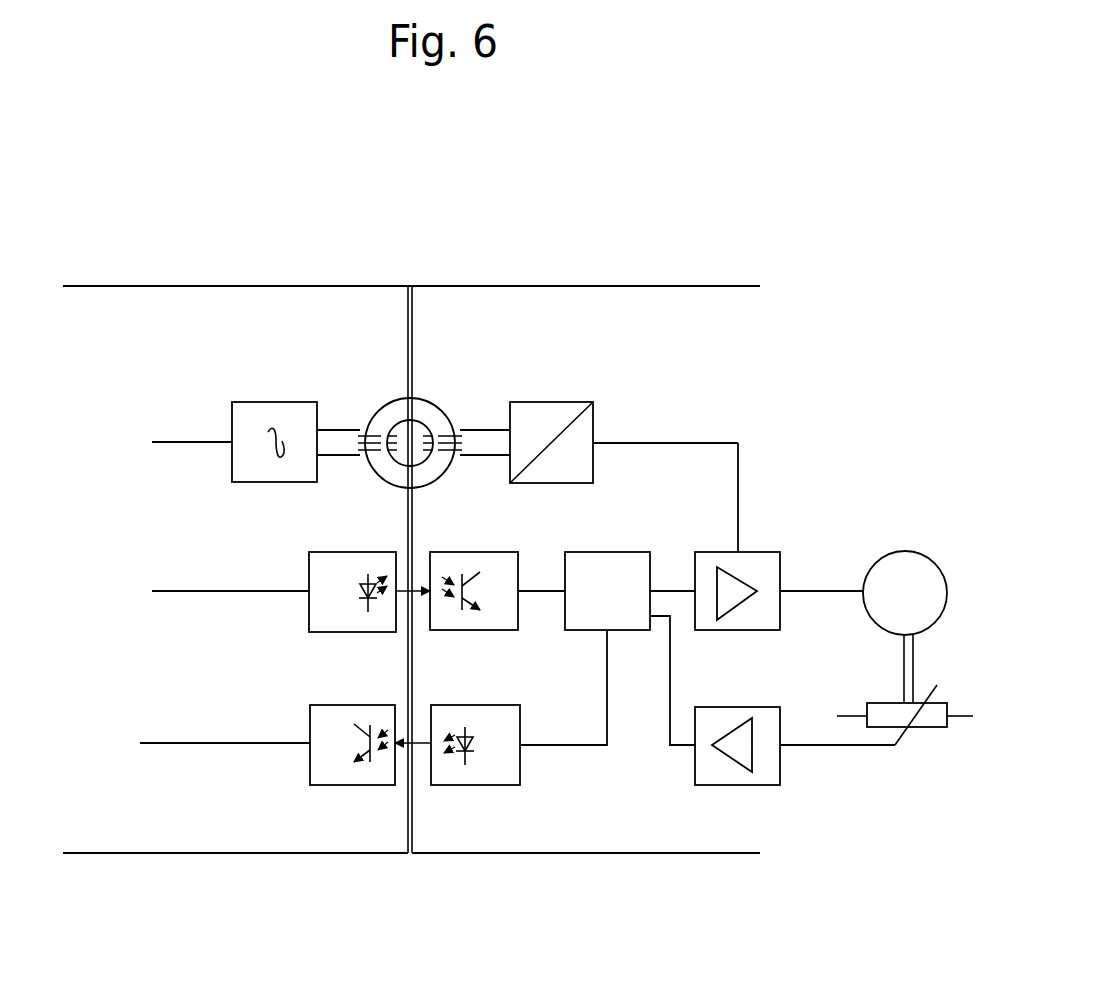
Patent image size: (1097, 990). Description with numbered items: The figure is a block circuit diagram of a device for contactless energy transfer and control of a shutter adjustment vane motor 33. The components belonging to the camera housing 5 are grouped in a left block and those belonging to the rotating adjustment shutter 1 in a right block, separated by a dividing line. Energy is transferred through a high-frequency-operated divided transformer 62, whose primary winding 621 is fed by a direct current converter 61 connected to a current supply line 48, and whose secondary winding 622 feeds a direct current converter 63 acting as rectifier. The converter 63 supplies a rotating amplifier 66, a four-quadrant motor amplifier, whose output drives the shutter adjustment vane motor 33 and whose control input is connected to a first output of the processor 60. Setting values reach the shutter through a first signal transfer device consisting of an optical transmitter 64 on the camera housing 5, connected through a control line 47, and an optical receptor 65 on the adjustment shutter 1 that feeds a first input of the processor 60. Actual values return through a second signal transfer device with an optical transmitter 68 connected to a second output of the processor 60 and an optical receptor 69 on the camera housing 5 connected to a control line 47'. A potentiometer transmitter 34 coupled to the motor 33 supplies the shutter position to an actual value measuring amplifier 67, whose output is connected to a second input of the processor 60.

The adjustment shutter 1 is at (623, 822).
The camera housing 5 is at (205, 838).
The shutter adjustment vane motor 33 is at (898, 573).
The potentiometer transmitter 34 is at (932, 718).
The control line 47 is at (219, 636).
The control line 47' is at (214, 787).
The current supply line 48 is at (160, 443).
The processor 60 is at (610, 565).
The direct current converter 61 is at (261, 413).
The divided transformer 62 is at (413, 421).
The primary winding 621 is at (383, 468).
The secondary winding 622 is at (433, 472).
The direct current converter 63 is at (587, 423).
The optical transmitter 64 is at (330, 605).
The optical receptor 65 is at (492, 605).
The rotating amplifier 66 is at (760, 567).
The actual value measuring amplifier 67 is at (763, 772).
The optical transmitter 68 is at (490, 760).
The optical receptor 69 is at (332, 763).